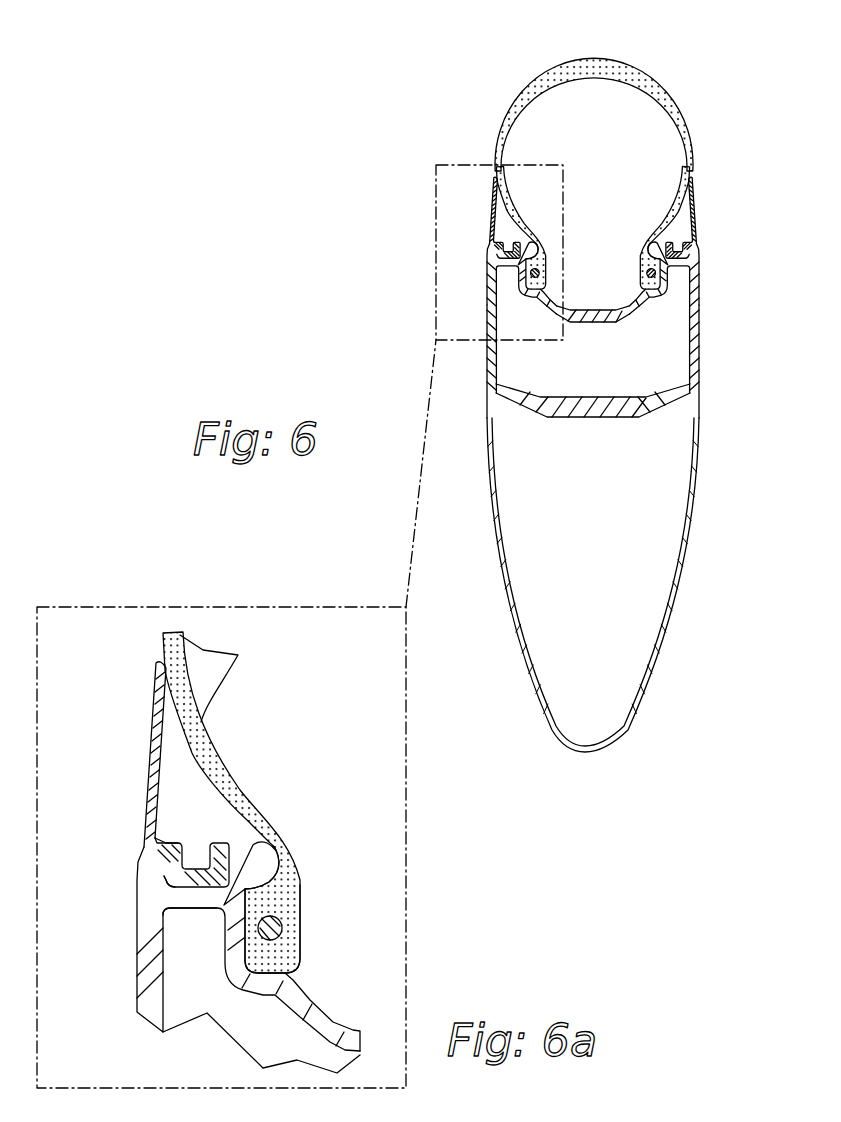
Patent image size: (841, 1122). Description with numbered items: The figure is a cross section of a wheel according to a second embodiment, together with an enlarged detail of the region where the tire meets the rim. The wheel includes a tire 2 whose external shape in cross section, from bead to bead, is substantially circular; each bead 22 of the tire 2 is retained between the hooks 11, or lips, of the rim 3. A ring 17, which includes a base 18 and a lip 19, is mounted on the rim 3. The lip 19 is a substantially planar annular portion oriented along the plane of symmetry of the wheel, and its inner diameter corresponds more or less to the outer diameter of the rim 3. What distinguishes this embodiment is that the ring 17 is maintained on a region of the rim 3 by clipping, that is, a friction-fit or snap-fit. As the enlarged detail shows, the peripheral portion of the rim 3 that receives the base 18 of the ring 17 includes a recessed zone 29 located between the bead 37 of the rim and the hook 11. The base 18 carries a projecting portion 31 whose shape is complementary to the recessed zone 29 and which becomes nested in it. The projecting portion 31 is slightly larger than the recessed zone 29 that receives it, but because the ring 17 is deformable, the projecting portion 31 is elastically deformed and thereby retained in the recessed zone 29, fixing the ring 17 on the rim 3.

In FIG. 6, the tire 2 is at (661, 86).
In FIG. 6A, the tire 2 is at (160, 643).
In FIG. 6, the rim 3 is at (700, 336).
In FIG. 6A, the rim 3 is at (135, 993).
In FIG. 6A, the hook 11 is at (260, 857).
In FIG. 6, the ring 17 is at (698, 214).
In FIG. 6A, the ring 17 is at (136, 774).
In FIG. 6A, the base 18 is at (158, 849).
In FIG. 6A, the lip 19 is at (147, 737).
In FIG. 6A, the bead 22 is at (277, 907).
In FIG. 6A, the recessed zone 29 is at (185, 905).
In FIG. 6A, the projecting portion 31 is at (163, 872).
In FIG. 6A, the bead of the rim 37 is at (163, 874).